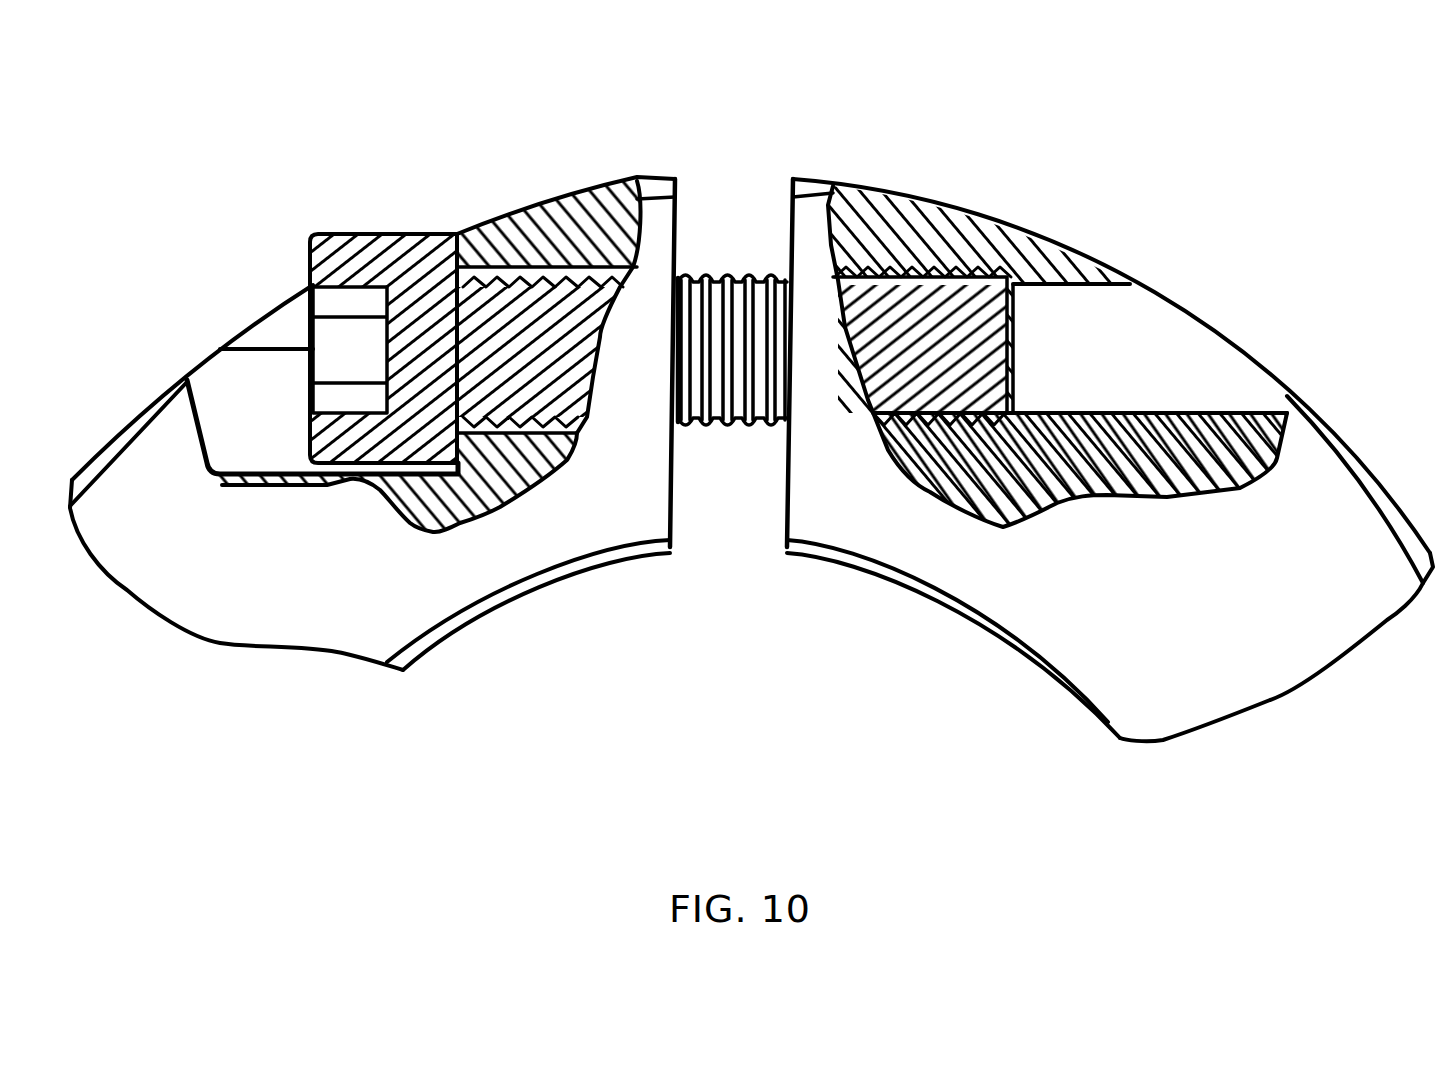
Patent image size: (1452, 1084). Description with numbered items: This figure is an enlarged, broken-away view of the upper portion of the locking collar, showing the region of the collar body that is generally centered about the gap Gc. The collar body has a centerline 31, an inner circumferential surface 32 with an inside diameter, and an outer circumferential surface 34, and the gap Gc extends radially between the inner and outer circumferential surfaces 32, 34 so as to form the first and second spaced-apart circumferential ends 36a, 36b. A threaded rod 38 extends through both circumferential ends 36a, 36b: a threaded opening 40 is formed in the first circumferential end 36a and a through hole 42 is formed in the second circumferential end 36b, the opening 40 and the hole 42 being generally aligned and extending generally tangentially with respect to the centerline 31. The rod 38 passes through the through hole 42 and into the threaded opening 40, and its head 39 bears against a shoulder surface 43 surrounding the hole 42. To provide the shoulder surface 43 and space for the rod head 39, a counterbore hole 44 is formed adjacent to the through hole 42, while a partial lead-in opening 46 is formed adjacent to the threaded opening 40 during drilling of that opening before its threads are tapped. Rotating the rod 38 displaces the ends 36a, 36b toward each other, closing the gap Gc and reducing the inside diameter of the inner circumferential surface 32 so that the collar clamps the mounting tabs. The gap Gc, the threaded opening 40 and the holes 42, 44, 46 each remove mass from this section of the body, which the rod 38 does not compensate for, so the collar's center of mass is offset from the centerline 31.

The centerline 31 is at (747, 783).
The inner circumferential surface 32 is at (957, 609).
The outer circumferential surface 34 is at (1327, 423).
The first circumferential end 36a is at (789, 213).
The second circumferential end 36b is at (681, 213).
The threaded rod 38 is at (727, 272).
The head 39 is at (378, 234).
The threaded opening 40 is at (997, 272).
The through hole 42 is at (538, 296).
The shoulder surface 43 is at (447, 463).
The counterbore hole 44 is at (267, 475).
The lead-in opening 46 is at (1118, 293).
The gap Gc is at (725, 507).